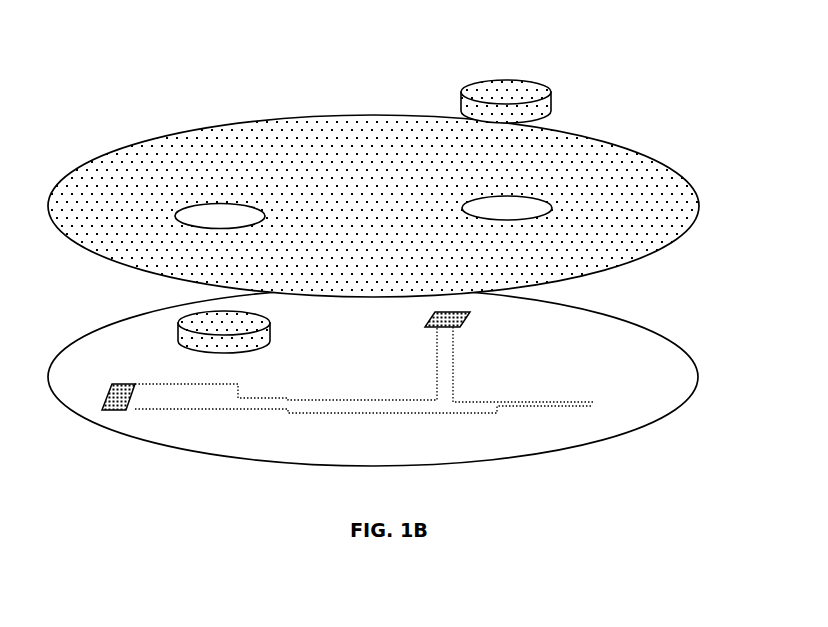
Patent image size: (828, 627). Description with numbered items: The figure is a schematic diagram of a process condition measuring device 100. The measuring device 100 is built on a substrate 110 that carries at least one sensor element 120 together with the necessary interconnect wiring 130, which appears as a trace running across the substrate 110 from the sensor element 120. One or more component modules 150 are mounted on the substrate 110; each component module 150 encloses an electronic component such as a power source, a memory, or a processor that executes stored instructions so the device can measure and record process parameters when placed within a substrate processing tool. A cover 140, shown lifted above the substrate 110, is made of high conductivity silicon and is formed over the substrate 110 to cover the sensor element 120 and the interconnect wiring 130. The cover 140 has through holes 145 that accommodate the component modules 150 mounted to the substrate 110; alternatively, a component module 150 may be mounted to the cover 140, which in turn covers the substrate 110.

The measuring device 100 is at (137, 99).
The substrate 110 is at (670, 343).
The sensor element 120 is at (103, 409).
The interconnect wiring 130 is at (568, 402).
The cover 140 is at (615, 143).
The through holes 145 is at (222, 213).
The component module 150 is at (522, 93).